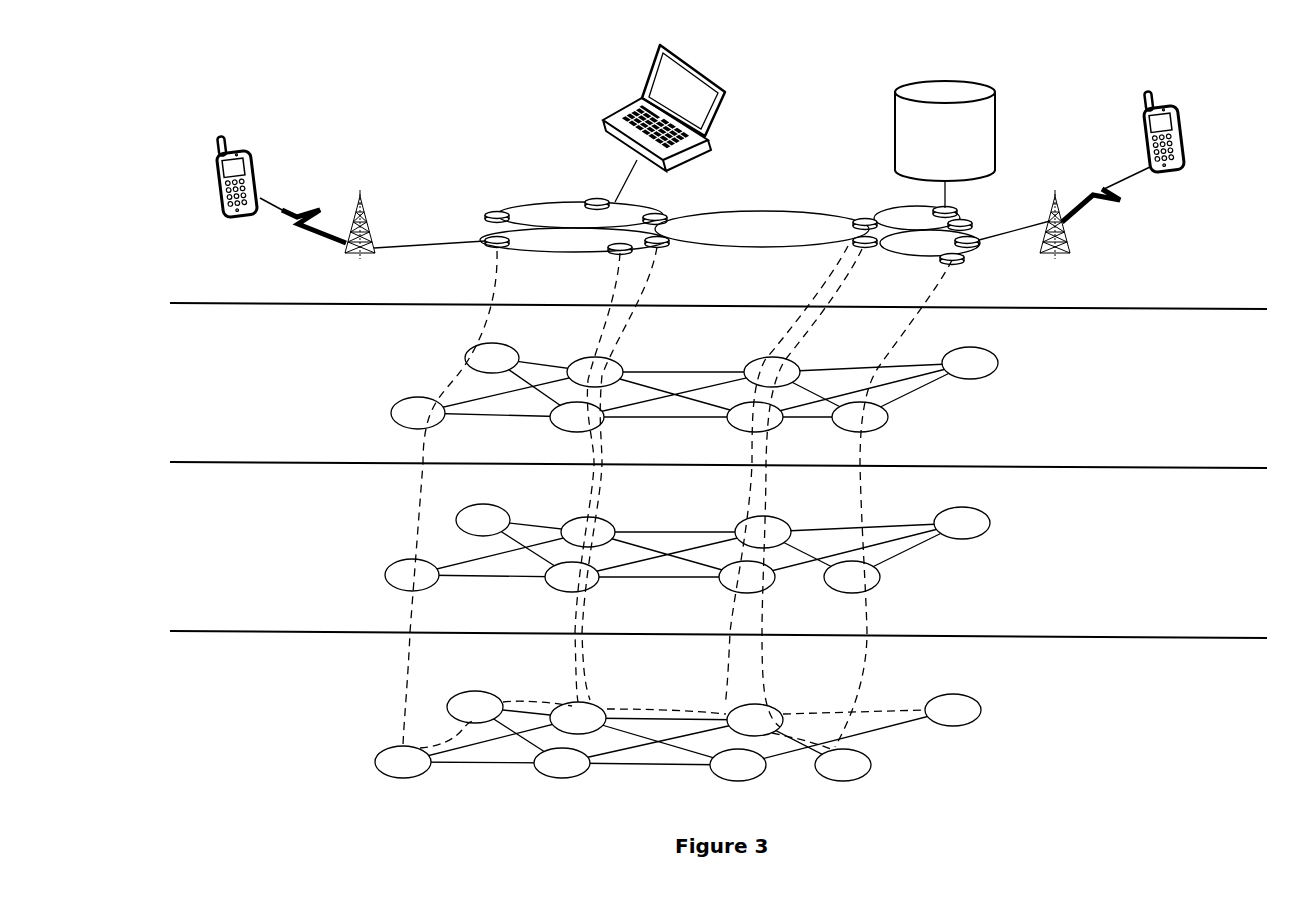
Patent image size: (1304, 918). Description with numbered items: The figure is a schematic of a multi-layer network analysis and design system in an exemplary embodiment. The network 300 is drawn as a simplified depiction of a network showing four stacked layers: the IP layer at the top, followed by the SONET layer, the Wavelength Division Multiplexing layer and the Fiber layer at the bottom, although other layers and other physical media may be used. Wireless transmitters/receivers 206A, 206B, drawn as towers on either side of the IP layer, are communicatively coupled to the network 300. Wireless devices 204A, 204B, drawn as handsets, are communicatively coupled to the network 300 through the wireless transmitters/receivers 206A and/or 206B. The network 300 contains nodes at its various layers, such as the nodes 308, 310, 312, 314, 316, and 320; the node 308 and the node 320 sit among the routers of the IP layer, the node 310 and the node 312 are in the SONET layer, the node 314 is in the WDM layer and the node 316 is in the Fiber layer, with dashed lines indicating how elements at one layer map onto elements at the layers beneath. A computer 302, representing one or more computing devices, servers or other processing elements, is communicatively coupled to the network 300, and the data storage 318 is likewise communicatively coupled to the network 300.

The network 300 is at (786, 53).
The computer 302 is at (603, 127).
The wireless device 204A is at (258, 158).
The wireless device 204B is at (1183, 112).
The wireless transmitter/receiver 206A is at (364, 207).
The wireless transmitter/receiver 206B is at (1055, 260).
The node 308 is at (481, 249).
The node 310 is at (473, 326).
The node 312 is at (391, 415).
The node 314 is at (385, 575).
The node 316 is at (377, 765).
The data storage 318 is at (945, 144).
The node 320 is at (967, 262).